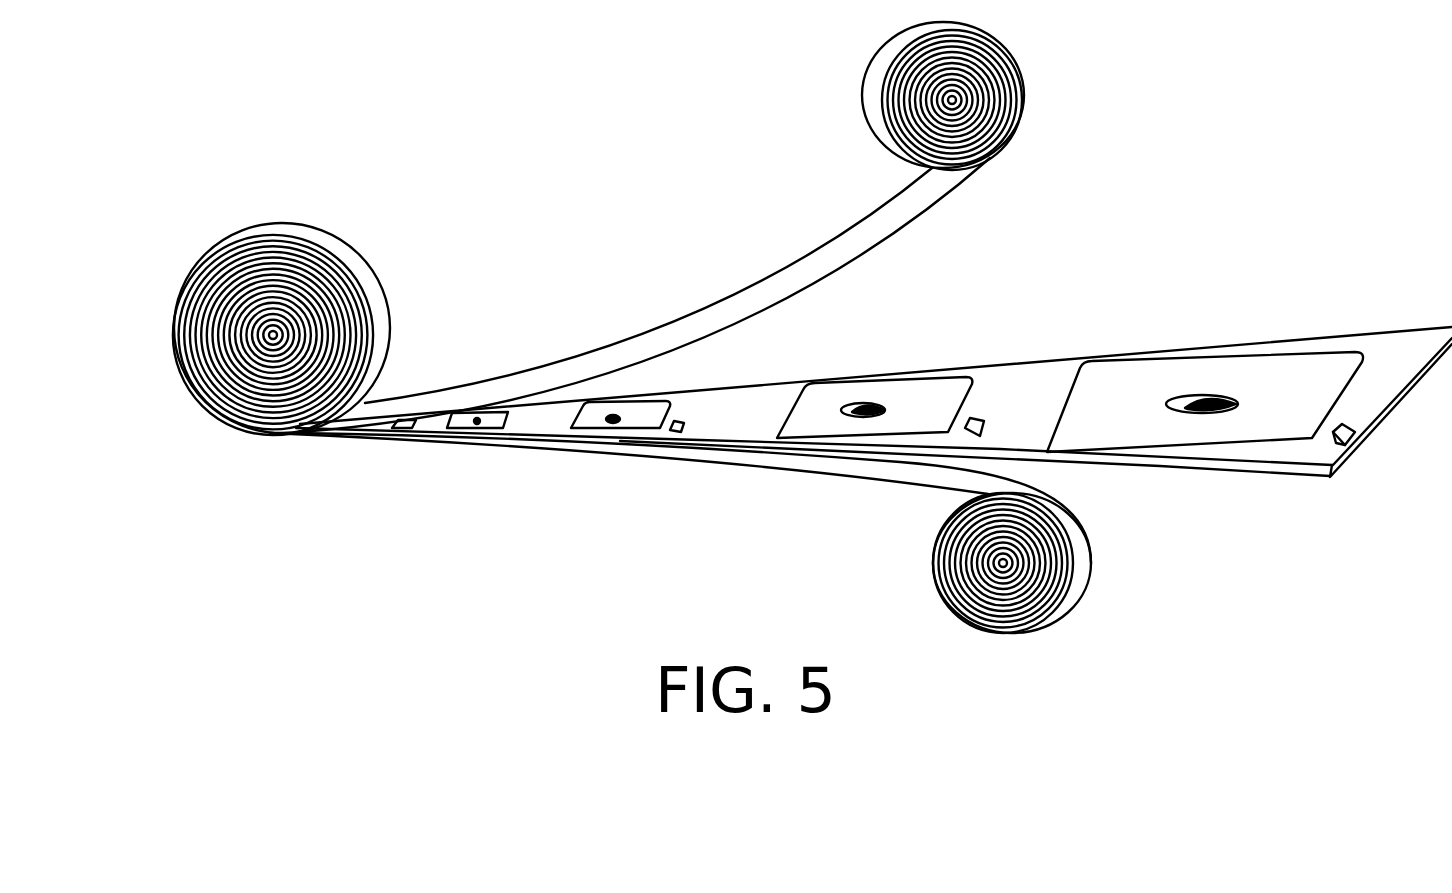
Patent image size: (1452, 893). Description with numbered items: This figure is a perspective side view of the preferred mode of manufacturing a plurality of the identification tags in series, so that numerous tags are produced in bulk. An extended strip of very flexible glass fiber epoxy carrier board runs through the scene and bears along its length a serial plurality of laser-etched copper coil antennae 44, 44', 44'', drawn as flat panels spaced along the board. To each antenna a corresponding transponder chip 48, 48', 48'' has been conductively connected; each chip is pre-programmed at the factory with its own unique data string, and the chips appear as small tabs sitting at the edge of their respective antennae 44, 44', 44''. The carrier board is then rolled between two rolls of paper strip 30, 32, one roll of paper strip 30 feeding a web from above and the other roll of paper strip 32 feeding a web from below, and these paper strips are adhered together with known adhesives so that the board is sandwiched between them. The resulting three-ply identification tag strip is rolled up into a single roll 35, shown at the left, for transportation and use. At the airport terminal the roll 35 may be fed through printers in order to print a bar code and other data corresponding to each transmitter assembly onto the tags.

The roll 35 is at (383, 258).
The roll of paper strip 30 is at (790, 286).
The roll of paper strip 32 is at (877, 473).
The laser-etched copper coil antenna 44 is at (1205, 335).
The laser-etched copper coil antenna 44' is at (874, 354).
The laser-etched copper coil antenna 44'' is at (611, 488).
The transponder chip 48 is at (1297, 500).
The transponder chip 48' is at (1021, 361).
The transponder chip 48'' is at (684, 500).